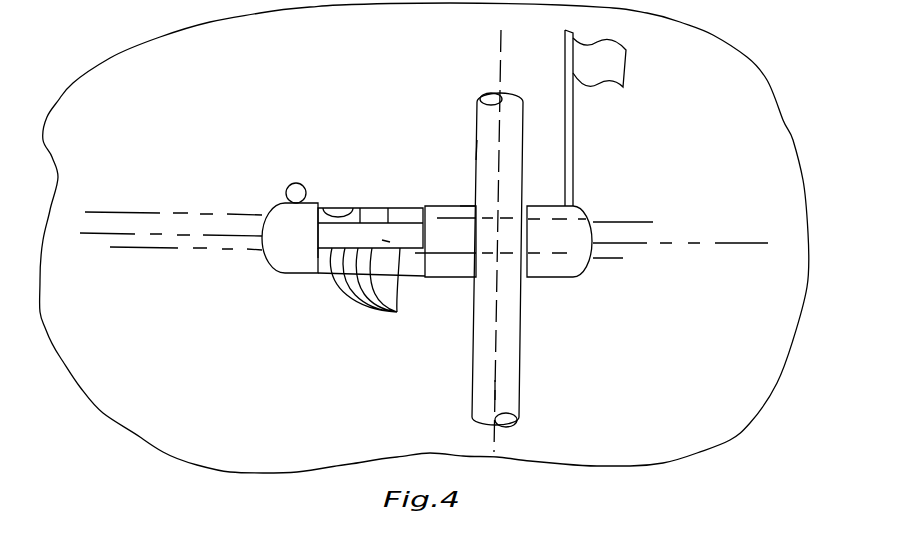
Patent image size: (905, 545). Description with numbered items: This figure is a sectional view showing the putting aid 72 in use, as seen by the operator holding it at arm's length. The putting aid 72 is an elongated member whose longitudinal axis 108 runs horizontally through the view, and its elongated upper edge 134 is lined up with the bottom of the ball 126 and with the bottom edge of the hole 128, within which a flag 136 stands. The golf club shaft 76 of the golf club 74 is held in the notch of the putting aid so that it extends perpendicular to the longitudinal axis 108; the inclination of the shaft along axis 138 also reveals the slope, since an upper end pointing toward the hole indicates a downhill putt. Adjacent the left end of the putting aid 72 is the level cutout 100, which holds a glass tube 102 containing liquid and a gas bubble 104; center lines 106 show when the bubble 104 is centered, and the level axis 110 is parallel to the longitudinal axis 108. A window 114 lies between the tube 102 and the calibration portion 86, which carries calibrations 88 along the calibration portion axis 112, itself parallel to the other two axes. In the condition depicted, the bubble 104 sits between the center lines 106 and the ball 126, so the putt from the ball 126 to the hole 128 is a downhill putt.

The putting aid 72 is at (265, 203).
The golf club 74 is at (477, 107).
The golf club shaft 76 is at (477, 147).
The calibration portion 86 is at (320, 258).
The calibrations 88 is at (375, 287).
The level cutout 100 is at (423, 208).
The glass tube 102 is at (418, 228).
The gas bubble 104 is at (338, 222).
The center lines 106 is at (360, 208).
The longitudinal axis 108 is at (732, 243).
The level axis 110 is at (158, 212).
The calibration portion axis 112 is at (158, 250).
The window 114 is at (382, 240).
The ball 126 is at (294, 183).
The hole 128 is at (577, 207).
The elongated upper edge 134 is at (464, 206).
The flag 136 is at (573, 132).
The axis 138 is at (494, 388).